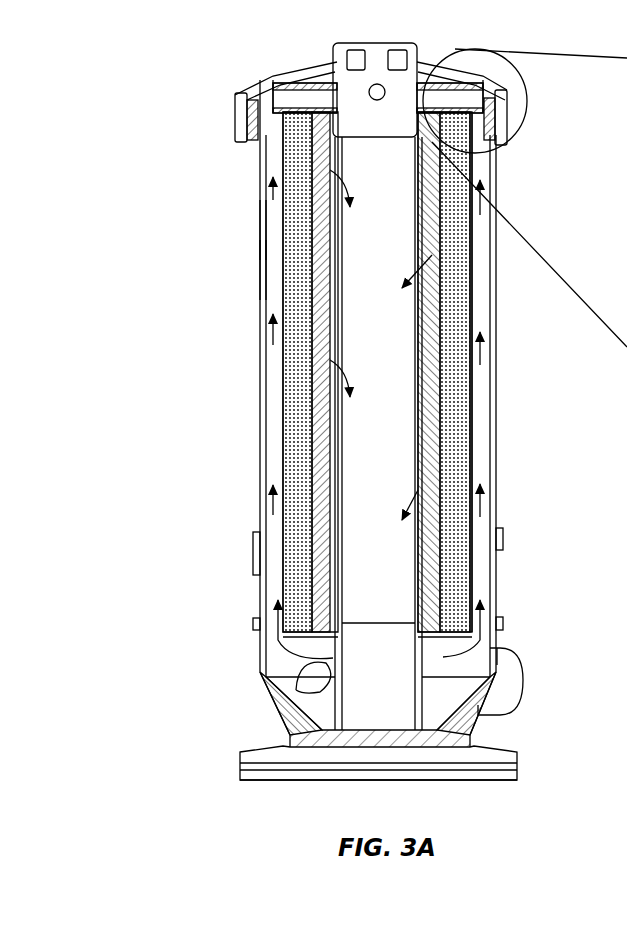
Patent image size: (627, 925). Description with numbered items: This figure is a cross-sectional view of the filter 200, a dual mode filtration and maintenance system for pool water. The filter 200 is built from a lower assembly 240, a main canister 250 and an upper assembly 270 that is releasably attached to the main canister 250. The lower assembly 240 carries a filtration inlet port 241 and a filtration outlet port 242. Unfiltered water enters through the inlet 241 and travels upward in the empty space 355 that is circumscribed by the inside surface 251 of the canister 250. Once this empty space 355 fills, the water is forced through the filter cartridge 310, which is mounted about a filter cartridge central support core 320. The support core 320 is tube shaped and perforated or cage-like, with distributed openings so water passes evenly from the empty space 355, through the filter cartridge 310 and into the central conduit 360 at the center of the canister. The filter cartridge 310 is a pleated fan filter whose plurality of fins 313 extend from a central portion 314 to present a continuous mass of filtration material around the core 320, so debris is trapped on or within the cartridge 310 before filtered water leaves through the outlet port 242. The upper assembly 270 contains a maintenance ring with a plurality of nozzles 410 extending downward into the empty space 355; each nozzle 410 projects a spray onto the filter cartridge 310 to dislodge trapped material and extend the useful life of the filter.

The filter 200 is at (148, 200).
The upper assembly 270 is at (290, 75).
The nozzle 410 is at (240, 135).
The inside surface 251 is at (268, 248).
The empty space 355 is at (272, 258).
The main canister 250 is at (258, 310).
The central conduit 360 is at (397, 250).
The central portion 314 is at (428, 300).
The fins 313 is at (457, 227).
The filter cartridge central support core 320 is at (332, 443).
The filter cartridge 310 is at (457, 460).
The filtration outlet port 242 is at (523, 667).
The filtration inlet port 241 is at (303, 680).
The lower assembly 240 is at (280, 710).